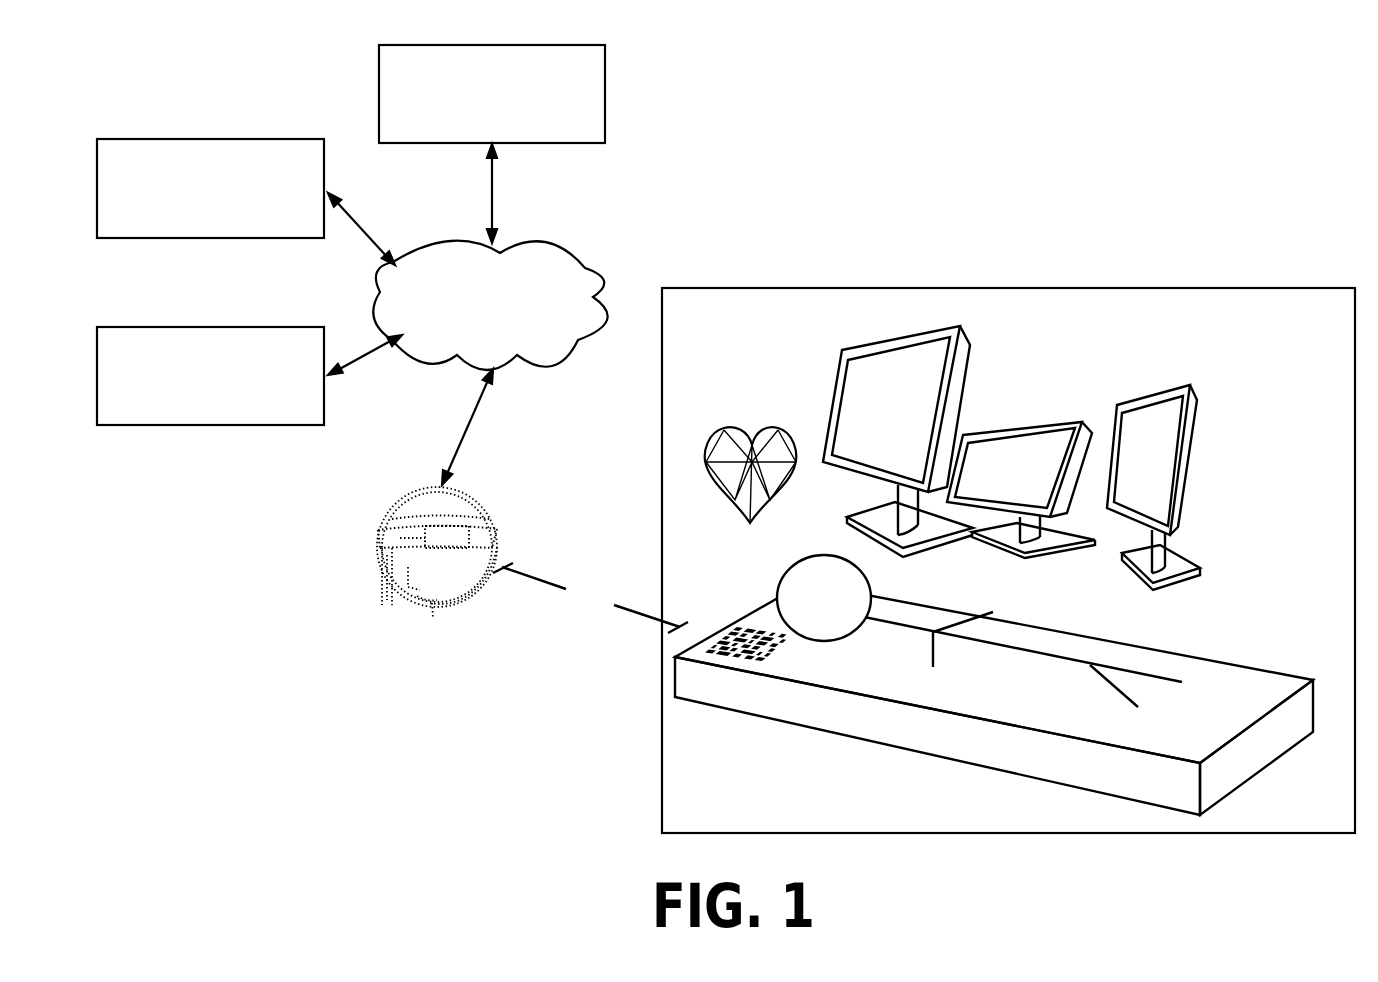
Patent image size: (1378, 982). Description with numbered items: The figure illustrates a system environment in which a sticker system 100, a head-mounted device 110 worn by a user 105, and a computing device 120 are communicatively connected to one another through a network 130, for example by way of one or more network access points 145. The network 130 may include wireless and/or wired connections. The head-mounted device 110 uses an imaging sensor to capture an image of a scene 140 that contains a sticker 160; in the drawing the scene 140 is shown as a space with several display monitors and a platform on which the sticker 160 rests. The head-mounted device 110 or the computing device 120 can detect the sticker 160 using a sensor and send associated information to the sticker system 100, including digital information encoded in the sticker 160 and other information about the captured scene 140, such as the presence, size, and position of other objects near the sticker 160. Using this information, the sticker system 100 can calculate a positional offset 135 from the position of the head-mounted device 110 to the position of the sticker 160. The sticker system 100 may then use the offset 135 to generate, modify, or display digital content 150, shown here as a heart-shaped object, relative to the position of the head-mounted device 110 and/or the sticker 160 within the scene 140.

The sticker system 100 is at (513, 119).
The user 105 is at (437, 570).
The head-mounted device 110 is at (385, 548).
The computing device 120 is at (190, 214).
The network 130 is at (513, 331).
The positional offset 135 is at (590, 598).
The scene 140 is at (1008, 560).
The network access point 145 is at (190, 416).
The digital content 150 is at (763, 427).
The sticker 160 is at (787, 643).